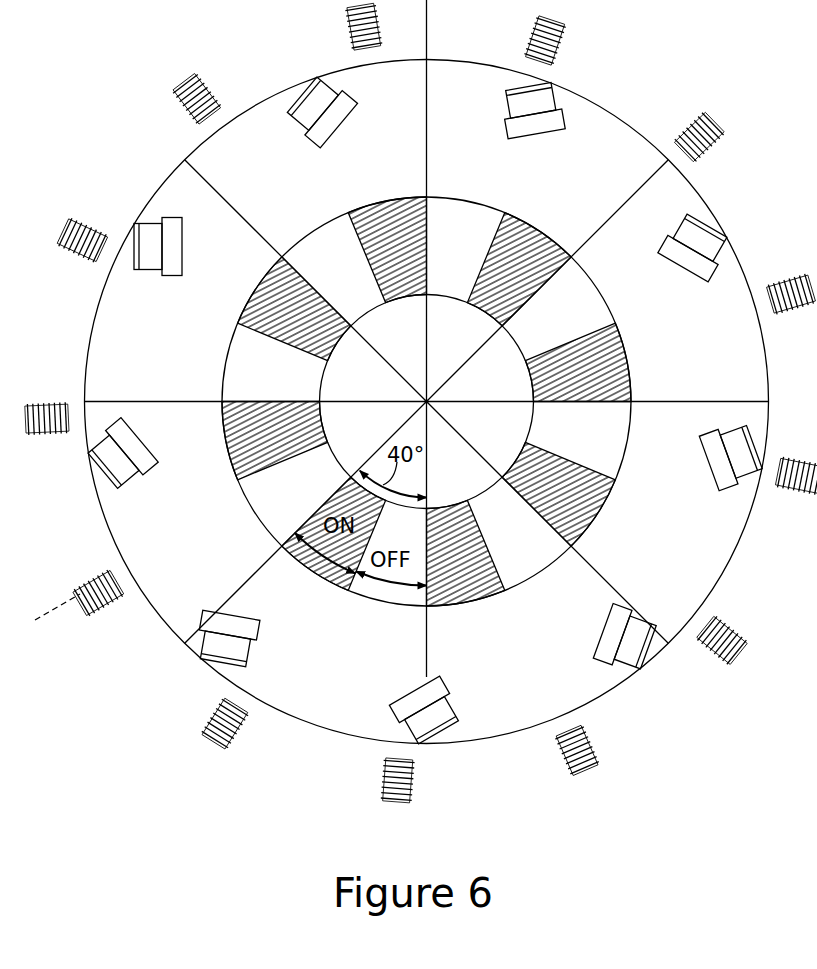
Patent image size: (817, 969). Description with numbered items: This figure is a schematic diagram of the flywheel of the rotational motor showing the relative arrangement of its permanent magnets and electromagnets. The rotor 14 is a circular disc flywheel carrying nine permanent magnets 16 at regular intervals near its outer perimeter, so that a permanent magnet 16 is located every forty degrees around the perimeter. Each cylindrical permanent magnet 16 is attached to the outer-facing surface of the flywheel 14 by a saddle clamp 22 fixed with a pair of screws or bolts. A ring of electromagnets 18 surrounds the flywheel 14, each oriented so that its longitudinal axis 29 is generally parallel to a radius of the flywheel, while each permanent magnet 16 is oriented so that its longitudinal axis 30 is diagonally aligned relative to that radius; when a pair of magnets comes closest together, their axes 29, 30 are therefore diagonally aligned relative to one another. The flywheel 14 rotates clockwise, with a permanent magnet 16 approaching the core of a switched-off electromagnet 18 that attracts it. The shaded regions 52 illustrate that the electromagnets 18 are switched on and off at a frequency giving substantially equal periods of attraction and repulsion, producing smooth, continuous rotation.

The rotor 14 is at (338, 667).
The permanent magnet 16 is at (202, 642).
The electromagnet 18 is at (93, 578).
The saddle clamp 22 is at (163, 617).
The longitudinal axis 29 is at (61, 608).
The longitudinal axis 30 is at (424, 410).
The shaded regions 52 is at (335, 500).